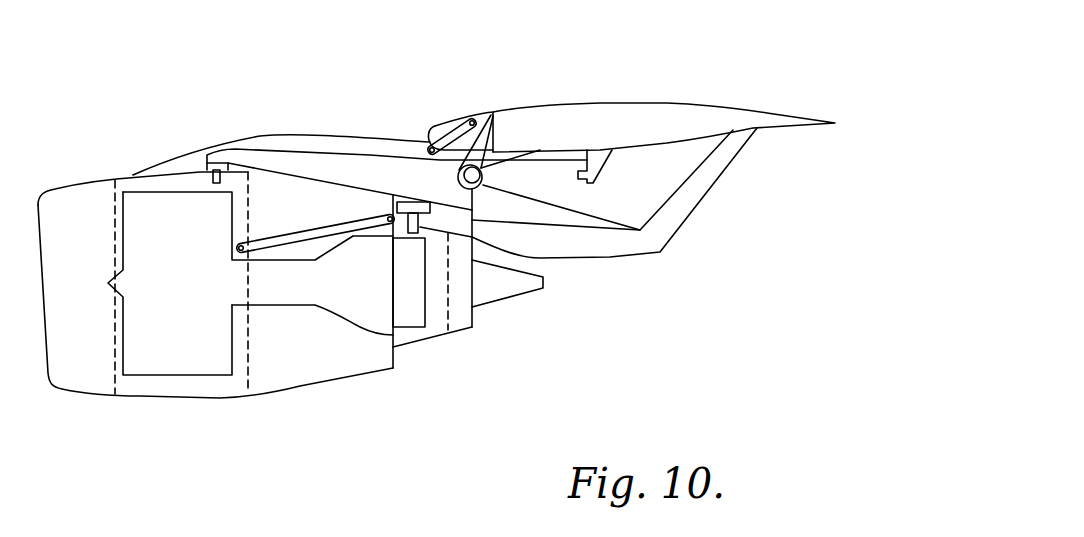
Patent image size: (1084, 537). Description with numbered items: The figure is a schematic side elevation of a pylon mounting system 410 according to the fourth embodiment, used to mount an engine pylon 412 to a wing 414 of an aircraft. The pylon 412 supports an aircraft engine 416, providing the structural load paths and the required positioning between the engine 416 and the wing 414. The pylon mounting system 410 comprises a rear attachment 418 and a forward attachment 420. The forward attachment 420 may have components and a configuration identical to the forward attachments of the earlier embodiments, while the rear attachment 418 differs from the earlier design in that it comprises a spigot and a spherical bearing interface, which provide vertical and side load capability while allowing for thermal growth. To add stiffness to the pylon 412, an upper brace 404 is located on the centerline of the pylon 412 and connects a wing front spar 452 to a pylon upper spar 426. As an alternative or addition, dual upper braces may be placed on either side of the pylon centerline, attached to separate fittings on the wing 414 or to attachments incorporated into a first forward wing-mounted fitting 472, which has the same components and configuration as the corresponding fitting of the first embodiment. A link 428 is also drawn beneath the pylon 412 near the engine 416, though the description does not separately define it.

The upper brace 404 is at (452, 136).
The pylon mounting system 410 is at (513, 130).
The engine pylon 412 is at (357, 152).
The wing 414 is at (713, 110).
The aircraft engine 416 is at (266, 305).
The rear attachment 418 is at (600, 160).
The forward attachment 420 is at (492, 172).
The pylon upper spar 426 is at (272, 147).
The link rod 428 is at (340, 186).
The wing front spar 452 is at (493, 113).
The first forward wing-mounted fitting 472 is at (493, 177).